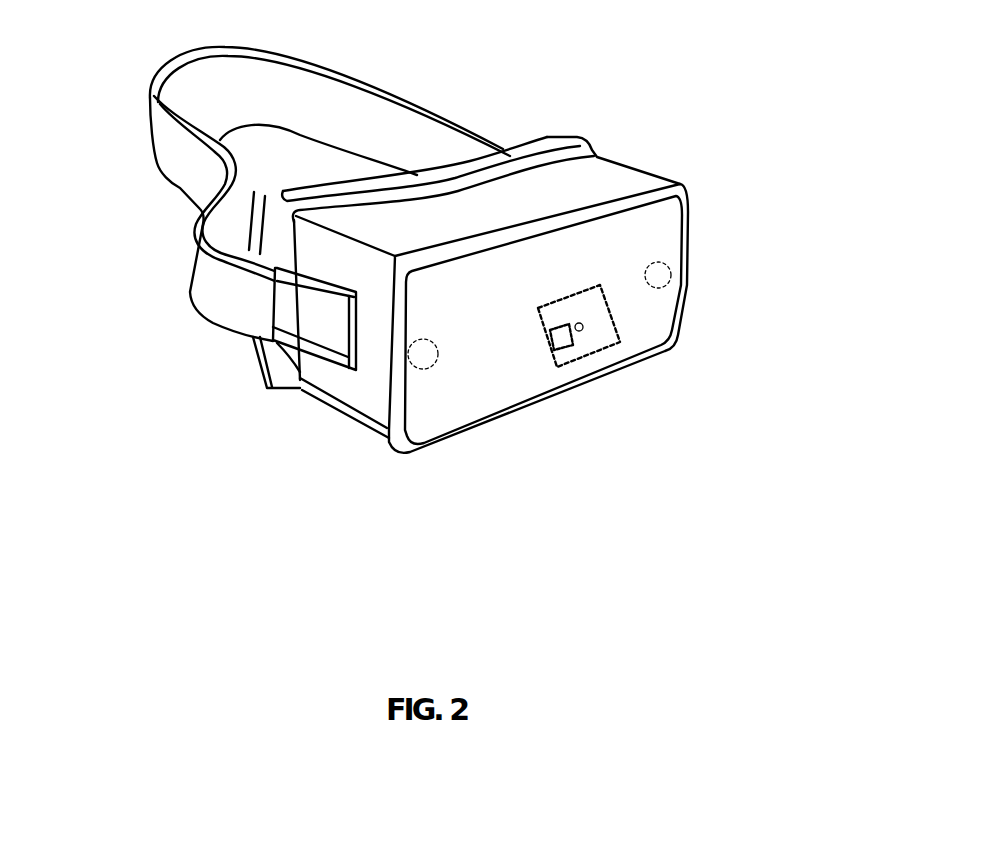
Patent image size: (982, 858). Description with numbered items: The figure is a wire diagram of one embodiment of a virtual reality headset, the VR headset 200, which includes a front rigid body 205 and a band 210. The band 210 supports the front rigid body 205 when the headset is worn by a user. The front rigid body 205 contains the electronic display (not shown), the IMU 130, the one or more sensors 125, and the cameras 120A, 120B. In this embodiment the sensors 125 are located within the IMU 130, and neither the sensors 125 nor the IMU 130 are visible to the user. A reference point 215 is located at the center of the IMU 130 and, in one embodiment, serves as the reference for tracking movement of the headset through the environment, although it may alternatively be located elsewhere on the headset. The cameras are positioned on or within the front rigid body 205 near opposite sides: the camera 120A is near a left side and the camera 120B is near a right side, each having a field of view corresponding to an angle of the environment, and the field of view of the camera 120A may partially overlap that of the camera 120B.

The VR headset 200 is at (45, 50).
The band 210 is at (423, 108).
The front rigid body 205 is at (682, 180).
The camera 120A is at (684, 263).
The camera 120B is at (424, 371).
The IMU 130 is at (613, 315).
The sensors 125 is at (561, 342).
The reference point 215 is at (585, 332).